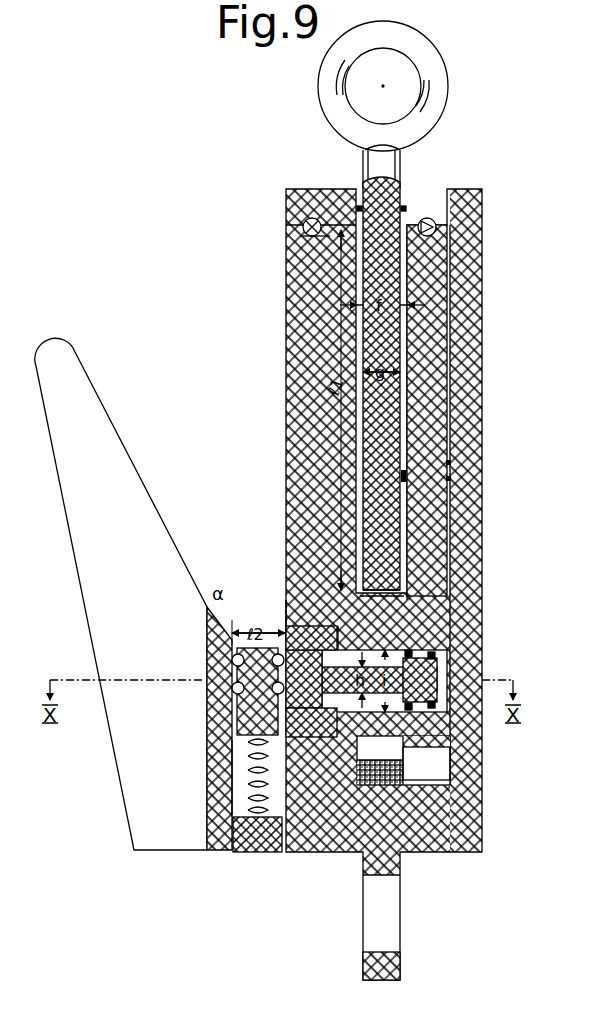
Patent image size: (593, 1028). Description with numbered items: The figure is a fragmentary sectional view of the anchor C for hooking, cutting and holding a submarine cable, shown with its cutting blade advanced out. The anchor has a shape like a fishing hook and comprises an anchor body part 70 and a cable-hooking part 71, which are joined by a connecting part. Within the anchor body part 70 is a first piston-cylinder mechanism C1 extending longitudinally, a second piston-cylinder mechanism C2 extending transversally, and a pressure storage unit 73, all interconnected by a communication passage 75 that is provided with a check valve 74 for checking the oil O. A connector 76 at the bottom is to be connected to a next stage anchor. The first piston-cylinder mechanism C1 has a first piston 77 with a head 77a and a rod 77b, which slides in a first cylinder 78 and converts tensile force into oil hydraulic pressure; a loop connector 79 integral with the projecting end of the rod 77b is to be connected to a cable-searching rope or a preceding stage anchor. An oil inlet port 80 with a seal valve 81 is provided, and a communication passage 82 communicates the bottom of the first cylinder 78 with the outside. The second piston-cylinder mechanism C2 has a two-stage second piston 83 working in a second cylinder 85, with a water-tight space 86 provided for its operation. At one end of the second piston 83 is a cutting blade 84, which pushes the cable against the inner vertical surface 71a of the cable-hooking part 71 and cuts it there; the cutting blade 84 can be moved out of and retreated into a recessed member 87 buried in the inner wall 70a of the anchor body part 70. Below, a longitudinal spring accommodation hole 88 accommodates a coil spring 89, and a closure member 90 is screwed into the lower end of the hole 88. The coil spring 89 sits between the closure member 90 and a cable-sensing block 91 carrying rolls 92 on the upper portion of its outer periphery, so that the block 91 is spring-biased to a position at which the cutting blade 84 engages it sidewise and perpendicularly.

The anchor body part 70 is at (465, 514).
The inner wall 70a is at (284, 625).
The cable-hooking part 71 is at (105, 462).
The inner vertical surface 71a is at (232, 688).
The pressure storage unit 73 is at (390, 752).
The check valve 74 is at (427, 217).
The communication passage 75 is at (450, 537).
The connector 76 is at (402, 915).
The first piston 77 is at (400, 442).
The head 77a is at (422, 598).
The rod 77b is at (407, 337).
The first cylinder 78 is at (403, 485).
The loop connector 79 is at (428, 48).
The oil inlet port 80 is at (303, 228).
The seal valve 81 is at (300, 238).
The communication passage 82 is at (350, 618).
The second piston 83 is at (422, 680).
The cutting blade 84 is at (310, 750).
The second cylinder 85 is at (410, 605).
The water-tight space 86 is at (405, 640).
The recessed member 87 is at (327, 737).
The spring accommodation hole 88 is at (232, 765).
The coil spring 89 is at (255, 790).
The closure member 90 is at (253, 840).
The cable-sensing block 91 is at (237, 720).
The rolls 92 is at (238, 660).
The oil O is at (447, 480).
The anchor C is at (468, 130).
The first piston-cylinder mechanism C1 is at (427, 400).
The second piston-cylinder mechanism C2 is at (300, 600).